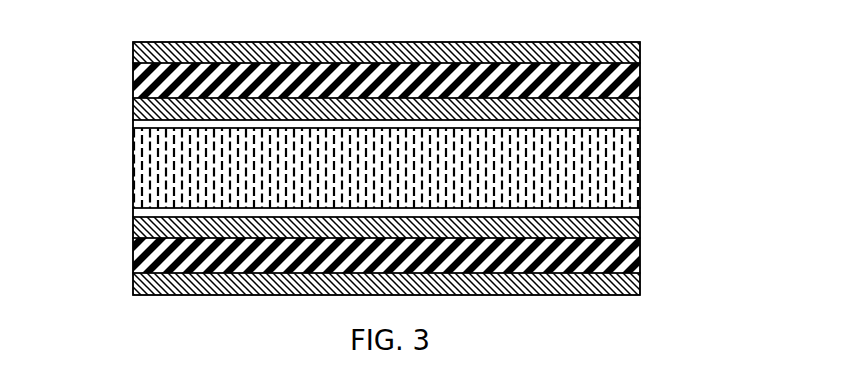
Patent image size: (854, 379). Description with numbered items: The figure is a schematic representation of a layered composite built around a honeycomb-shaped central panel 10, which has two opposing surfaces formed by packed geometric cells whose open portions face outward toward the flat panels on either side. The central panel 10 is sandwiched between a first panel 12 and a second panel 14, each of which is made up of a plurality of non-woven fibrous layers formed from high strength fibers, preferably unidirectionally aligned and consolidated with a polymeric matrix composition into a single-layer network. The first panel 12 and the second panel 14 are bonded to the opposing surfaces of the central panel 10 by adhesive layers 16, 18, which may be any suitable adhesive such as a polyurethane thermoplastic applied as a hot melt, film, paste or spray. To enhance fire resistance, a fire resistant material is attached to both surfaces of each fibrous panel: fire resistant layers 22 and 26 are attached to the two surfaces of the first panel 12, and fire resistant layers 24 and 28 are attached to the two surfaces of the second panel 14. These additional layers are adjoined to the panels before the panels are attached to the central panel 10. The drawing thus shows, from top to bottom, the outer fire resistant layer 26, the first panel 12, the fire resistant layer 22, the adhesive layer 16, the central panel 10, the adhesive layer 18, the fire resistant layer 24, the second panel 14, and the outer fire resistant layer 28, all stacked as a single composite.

The central panel 10 is at (625, 153).
The first panel 12 is at (640, 82).
The second panel 14 is at (632, 253).
The adhesive layer 16 is at (633, 122).
The adhesive layer 18 is at (630, 209).
The fire resistant layer 22 is at (135, 110).
The fire resistant layer 24 is at (135, 231).
The fire resistant layer 26 is at (135, 56).
The fire resistant layer 28 is at (135, 287).